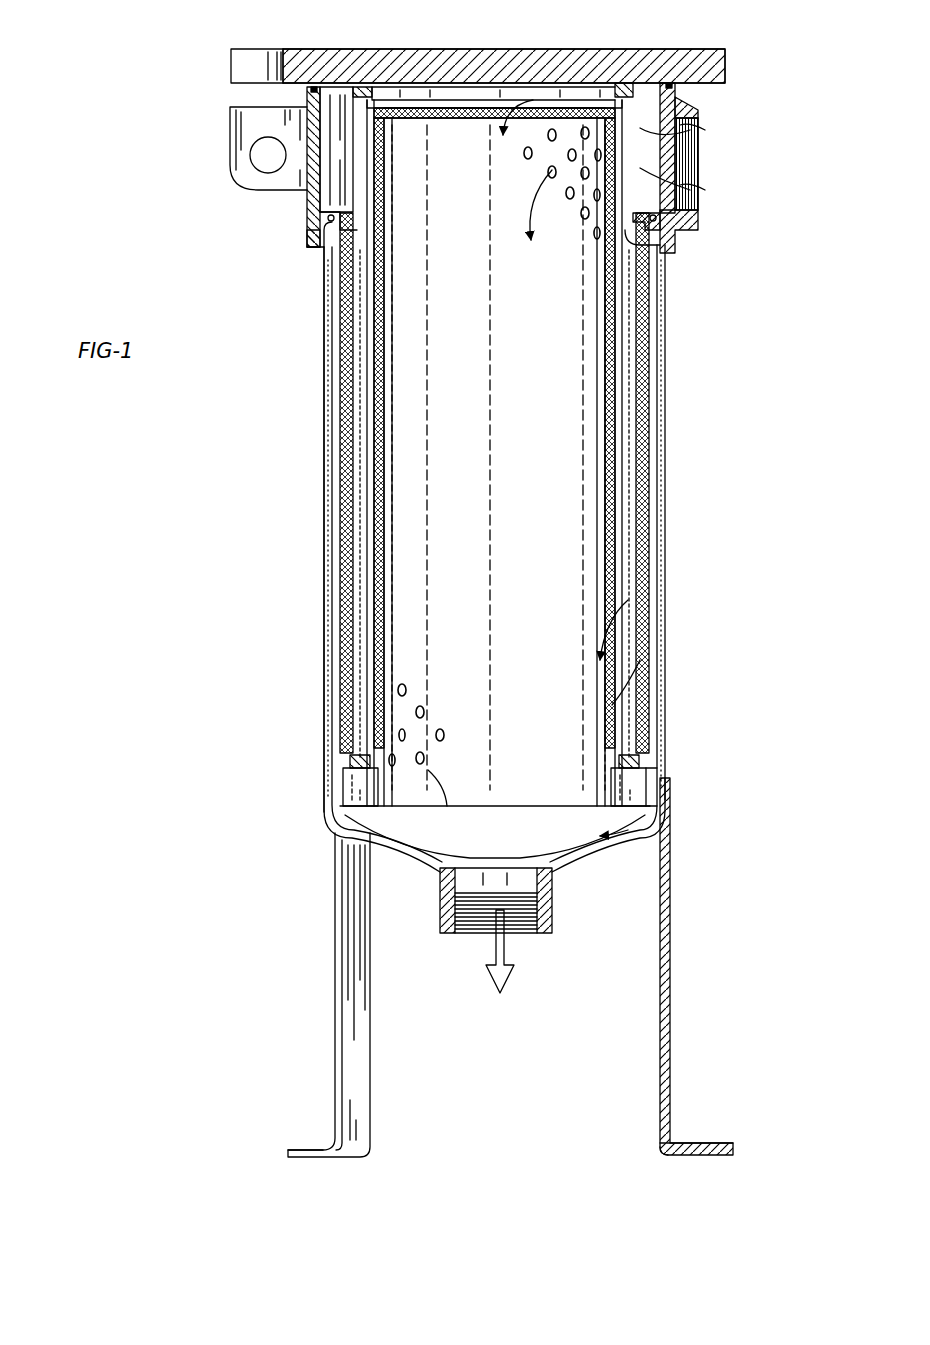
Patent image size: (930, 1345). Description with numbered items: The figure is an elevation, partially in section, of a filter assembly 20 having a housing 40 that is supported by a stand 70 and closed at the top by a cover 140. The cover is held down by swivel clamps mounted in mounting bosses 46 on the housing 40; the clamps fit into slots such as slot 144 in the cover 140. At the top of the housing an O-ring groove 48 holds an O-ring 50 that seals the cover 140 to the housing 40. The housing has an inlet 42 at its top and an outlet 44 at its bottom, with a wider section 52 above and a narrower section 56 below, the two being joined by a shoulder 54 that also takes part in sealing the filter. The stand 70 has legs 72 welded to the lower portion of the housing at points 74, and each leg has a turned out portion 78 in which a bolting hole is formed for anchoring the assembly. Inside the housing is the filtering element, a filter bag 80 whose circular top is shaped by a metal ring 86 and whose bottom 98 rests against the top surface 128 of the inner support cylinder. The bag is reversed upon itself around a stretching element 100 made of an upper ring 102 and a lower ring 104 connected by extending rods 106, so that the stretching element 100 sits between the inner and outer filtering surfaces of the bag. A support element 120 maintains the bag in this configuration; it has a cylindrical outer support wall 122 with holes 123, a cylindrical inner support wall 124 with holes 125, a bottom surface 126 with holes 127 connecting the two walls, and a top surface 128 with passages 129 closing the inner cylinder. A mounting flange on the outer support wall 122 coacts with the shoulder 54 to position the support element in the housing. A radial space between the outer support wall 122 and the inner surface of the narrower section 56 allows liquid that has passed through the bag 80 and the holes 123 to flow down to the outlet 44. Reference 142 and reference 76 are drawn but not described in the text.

The filter assembly 20 is at (248, 583).
The housing 40 is at (674, 560).
The inlet 42 is at (700, 216).
The outlet 44 is at (553, 926).
The mounting bosses 46 is at (232, 140).
The O-ring groove 48 is at (305, 93).
The O-ring 50 is at (315, 87).
The wider section 52 is at (338, 183).
The shoulder 54 is at (312, 247).
The narrower section 56 is at (340, 836).
The stand 70 is at (336, 1000).
The legs 72 is at (372, 1036).
The welding points 74 is at (673, 830).
The bend 76 is at (695, 1145).
The turned out portion 78 is at (306, 1150).
The filter bag 80 is at (346, 452).
The metal ring 86 is at (328, 219).
The bottom of the bag 98 is at (486, 108).
The stretching element 100 is at (444, 84).
The upper ring 102 is at (400, 88).
The lower ring 104 is at (652, 770).
The extending rods 106 is at (358, 374).
The support element 120 is at (344, 797).
The outer support wall 122 is at (386, 508).
The holes or passages 123 is at (358, 700).
The inner support wall 124 is at (598, 372).
The holes or passages 125 is at (597, 238).
The bottom surface 126 is at (578, 838).
The holes or passages 127 is at (352, 768).
The top surface 128 is at (413, 120).
The passages 129 is at (467, 118).
The cover 140 is at (713, 46).
The cover 142 is at (546, 52).
The slot 144 is at (262, 62).